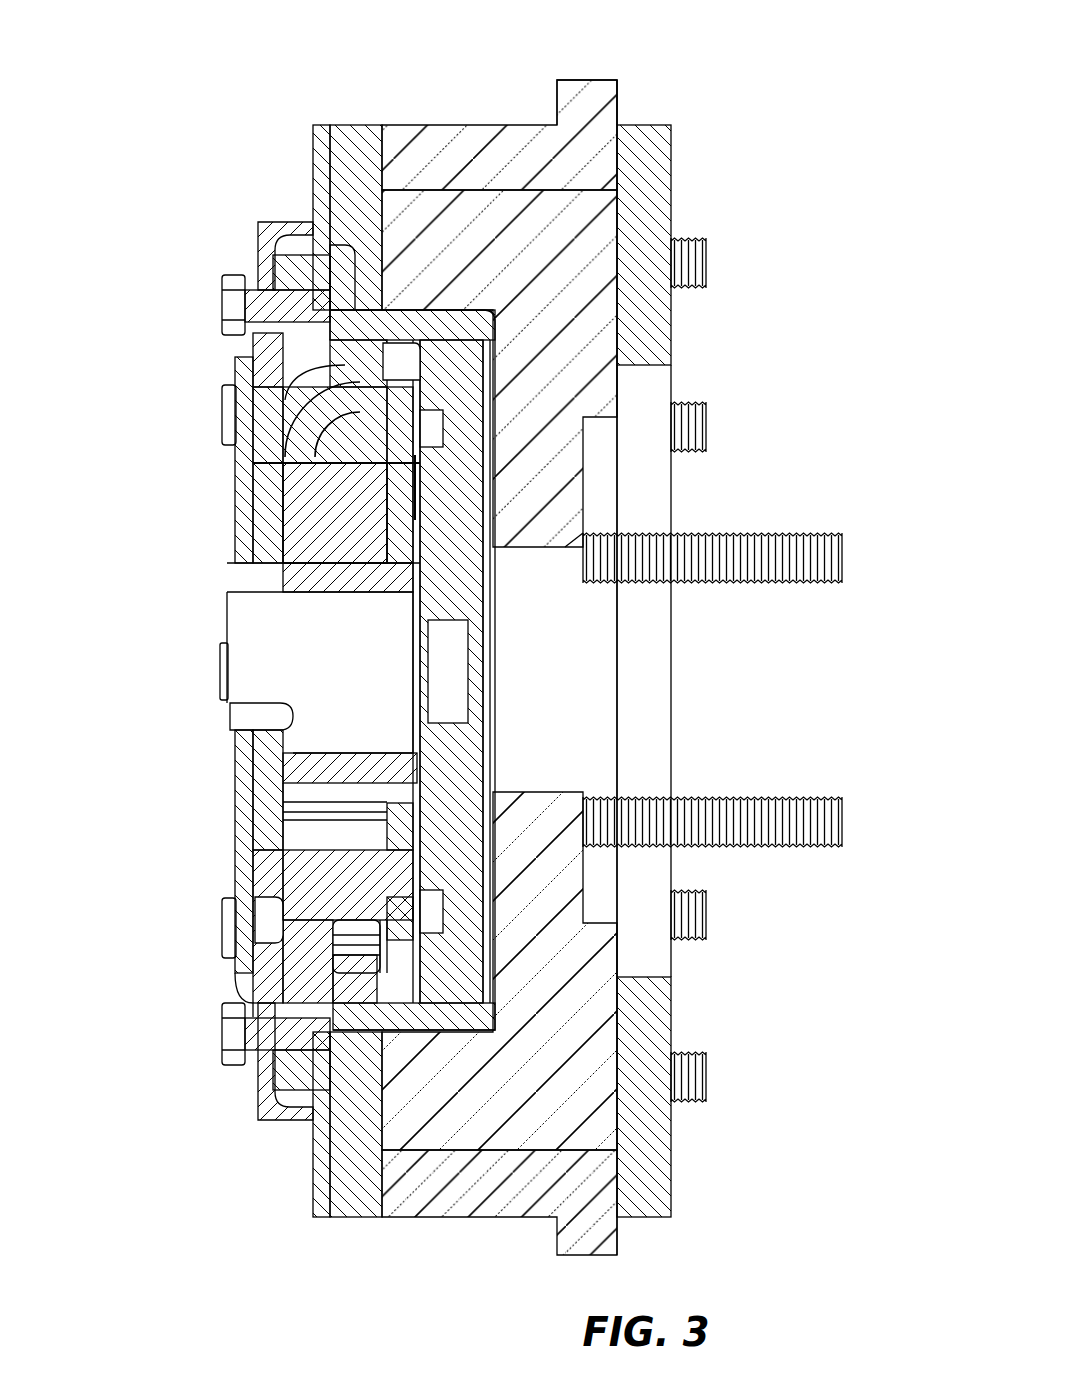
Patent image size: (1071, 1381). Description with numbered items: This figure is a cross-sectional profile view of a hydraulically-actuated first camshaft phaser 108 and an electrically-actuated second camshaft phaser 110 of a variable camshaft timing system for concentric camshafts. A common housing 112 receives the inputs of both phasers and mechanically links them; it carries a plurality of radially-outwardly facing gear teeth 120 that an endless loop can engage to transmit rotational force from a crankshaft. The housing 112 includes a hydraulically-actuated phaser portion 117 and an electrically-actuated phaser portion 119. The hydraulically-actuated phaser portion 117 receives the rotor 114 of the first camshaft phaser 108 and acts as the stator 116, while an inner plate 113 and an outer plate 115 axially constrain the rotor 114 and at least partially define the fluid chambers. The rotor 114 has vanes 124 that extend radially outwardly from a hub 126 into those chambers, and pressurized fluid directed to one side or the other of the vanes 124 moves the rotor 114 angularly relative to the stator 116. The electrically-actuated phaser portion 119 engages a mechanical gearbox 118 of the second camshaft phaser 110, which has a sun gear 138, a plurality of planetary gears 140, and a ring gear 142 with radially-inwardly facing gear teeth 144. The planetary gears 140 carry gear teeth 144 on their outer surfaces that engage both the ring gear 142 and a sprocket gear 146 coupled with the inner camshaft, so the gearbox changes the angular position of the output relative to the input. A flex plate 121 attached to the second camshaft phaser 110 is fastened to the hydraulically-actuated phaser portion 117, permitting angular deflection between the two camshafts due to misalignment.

The first camshaft phaser 108 is at (672, 327).
The second camshaft phaser 110 is at (218, 562).
The housing 112 is at (312, 75).
The inner plate 113 is at (674, 1192).
The rotor 114 is at (590, 248).
The outer plate 115 is at (338, 1175).
The stator 116 is at (600, 182).
The hydraulically-actuated phaser portion 117 is at (332, 1246).
The mechanical gearbox 118 is at (307, 818).
The electrically-actuated phaser portion 119 is at (330, 1246).
The gear teeth 120 is at (617, 108).
The flex plate 121 is at (312, 1172).
The vanes 124 is at (457, 213).
The hub 126 is at (565, 547).
The sun gear 138 is at (232, 702).
The planetary gears 140 is at (282, 513).
The ring gear 142 is at (305, 384).
The gear teeth 144 is at (345, 456).
The sprocket gear 146 is at (348, 366).